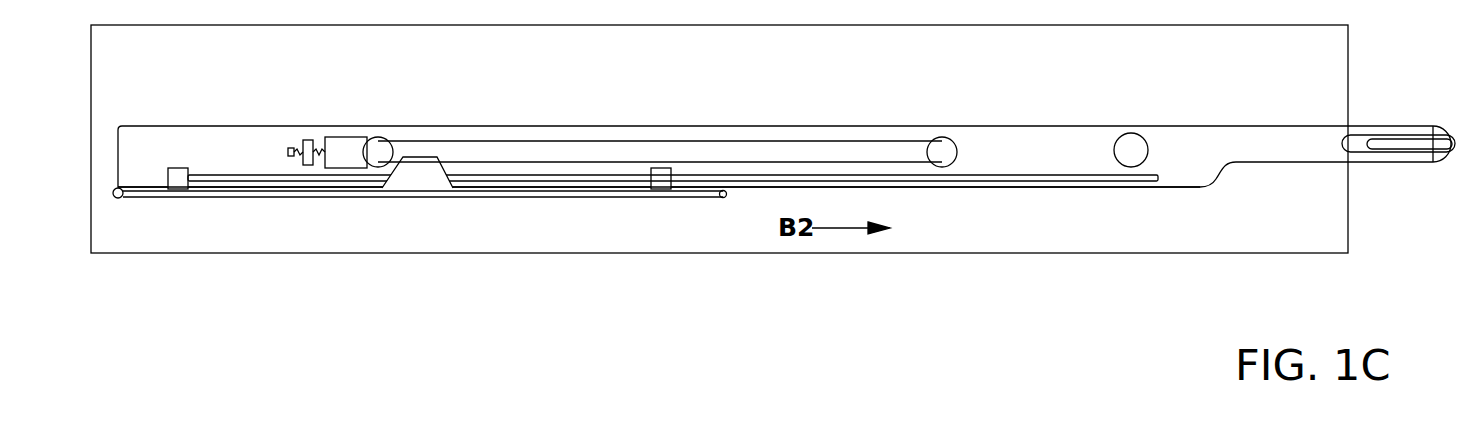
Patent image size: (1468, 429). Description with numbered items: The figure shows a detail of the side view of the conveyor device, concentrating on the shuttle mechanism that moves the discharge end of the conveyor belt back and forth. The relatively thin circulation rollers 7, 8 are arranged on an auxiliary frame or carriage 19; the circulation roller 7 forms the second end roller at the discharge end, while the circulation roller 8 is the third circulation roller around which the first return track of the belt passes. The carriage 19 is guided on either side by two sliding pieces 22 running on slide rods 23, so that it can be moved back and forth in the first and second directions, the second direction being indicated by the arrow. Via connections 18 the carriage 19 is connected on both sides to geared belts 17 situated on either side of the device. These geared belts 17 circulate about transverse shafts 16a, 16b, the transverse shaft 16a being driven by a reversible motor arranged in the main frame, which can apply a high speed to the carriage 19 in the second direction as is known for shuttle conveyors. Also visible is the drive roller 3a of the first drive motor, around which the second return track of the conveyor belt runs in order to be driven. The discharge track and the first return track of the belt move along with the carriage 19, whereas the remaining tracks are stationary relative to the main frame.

The circulation roller 7 is at (120, 198).
The circulation roller 8 is at (727, 197).
The sliding pieces 22 is at (176, 190).
The slide rods 23 is at (912, 178).
The carriage 19 is at (563, 197).
The connections 18 is at (425, 183).
The transverse shaft 16b is at (383, 148).
The geared belts 17 is at (651, 141).
The transverse shaft 16a is at (943, 148).
The drive roller 3a is at (1135, 150).